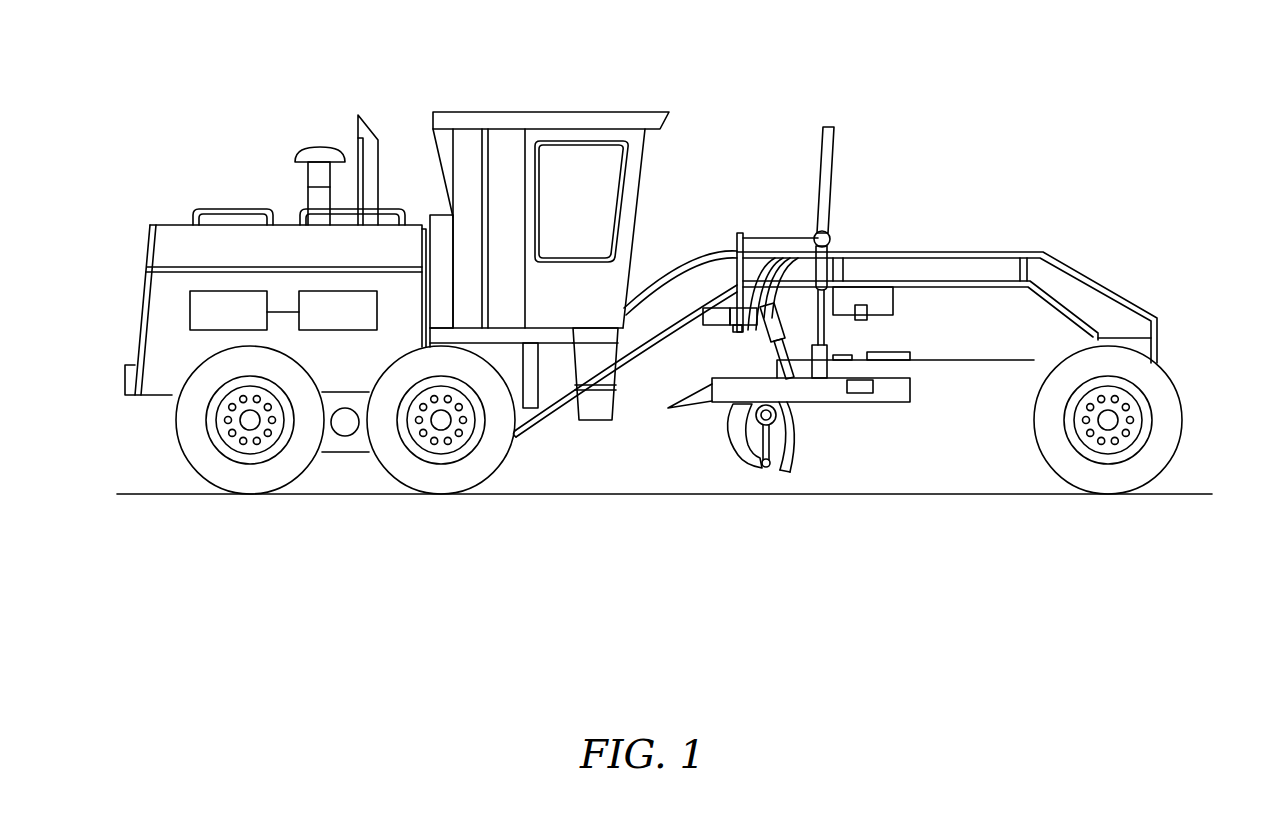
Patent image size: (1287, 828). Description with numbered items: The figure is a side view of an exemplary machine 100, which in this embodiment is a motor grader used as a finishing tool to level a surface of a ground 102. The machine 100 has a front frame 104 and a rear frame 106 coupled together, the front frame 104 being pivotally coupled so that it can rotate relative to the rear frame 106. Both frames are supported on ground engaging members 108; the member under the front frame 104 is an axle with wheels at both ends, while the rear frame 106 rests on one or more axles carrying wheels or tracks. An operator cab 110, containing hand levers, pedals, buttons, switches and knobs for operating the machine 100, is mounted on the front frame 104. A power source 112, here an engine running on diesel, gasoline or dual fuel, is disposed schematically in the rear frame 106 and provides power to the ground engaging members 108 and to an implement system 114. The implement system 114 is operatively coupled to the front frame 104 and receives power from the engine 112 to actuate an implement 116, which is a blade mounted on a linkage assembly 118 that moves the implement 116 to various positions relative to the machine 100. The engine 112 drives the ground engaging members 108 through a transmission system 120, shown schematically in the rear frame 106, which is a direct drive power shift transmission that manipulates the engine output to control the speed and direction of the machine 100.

The machine 100 is at (924, 82).
The ground 102 is at (947, 492).
The front frame 104 is at (1185, 513).
The rear frame 106 is at (448, 513).
The ground engaging members 108 is at (174, 432).
The operator cab 110 is at (603, 112).
The power source 112 is at (247, 322).
The implement system 114 is at (870, 412).
The implement 116 is at (787, 452).
The linkage assembly 118 is at (942, 351).
The transmission system 120 is at (358, 322).